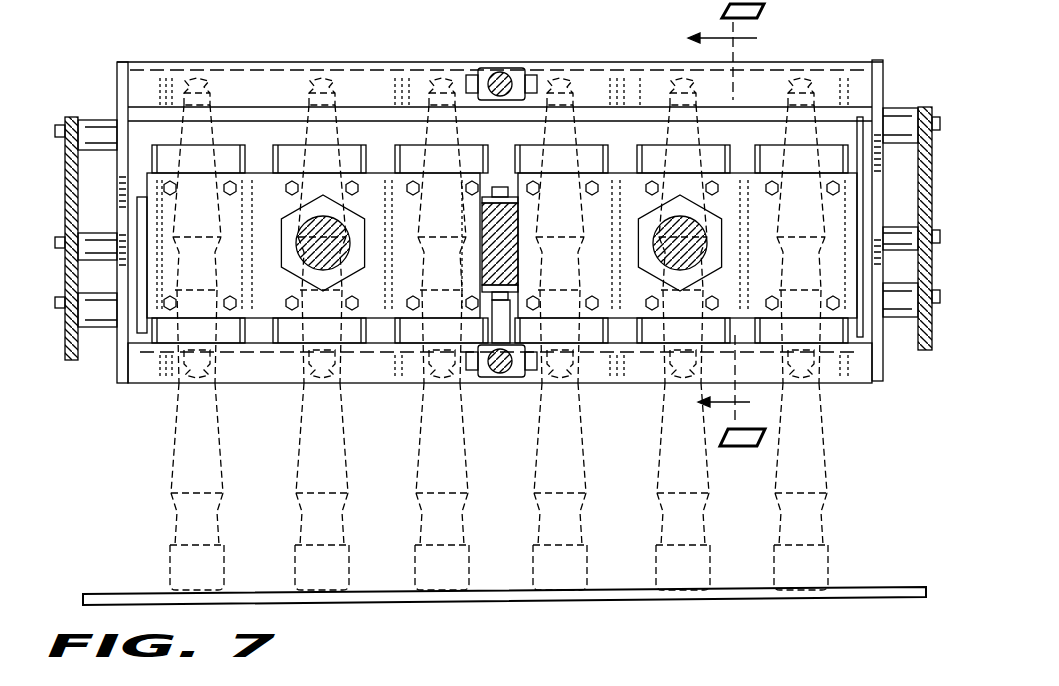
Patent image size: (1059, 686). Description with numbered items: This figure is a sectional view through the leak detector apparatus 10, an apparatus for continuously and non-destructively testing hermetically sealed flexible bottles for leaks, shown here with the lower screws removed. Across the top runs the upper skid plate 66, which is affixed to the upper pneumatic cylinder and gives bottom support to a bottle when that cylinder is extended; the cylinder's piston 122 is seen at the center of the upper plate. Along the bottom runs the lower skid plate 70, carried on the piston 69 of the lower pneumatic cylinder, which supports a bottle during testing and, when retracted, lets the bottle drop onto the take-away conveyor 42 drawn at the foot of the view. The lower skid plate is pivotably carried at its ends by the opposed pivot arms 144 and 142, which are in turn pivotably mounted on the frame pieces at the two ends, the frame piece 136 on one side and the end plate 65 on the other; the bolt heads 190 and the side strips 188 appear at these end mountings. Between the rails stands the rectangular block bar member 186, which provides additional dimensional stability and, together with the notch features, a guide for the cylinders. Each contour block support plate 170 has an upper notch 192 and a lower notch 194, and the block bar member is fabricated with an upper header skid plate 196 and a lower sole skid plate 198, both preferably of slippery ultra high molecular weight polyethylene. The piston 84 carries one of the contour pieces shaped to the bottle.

The apparatus 10 is at (397, 50).
The take-away conveyor 42 is at (853, 587).
The end plate 65 is at (935, 163).
The upper skid plate 66 is at (273, 66).
The piston 69 is at (507, 372).
The lower skid plate 70 is at (245, 365).
The piston 84 is at (687, 268).
The piston 122 is at (500, 76).
The frame piece 136 is at (63, 176).
The pivot arm 142 is at (905, 320).
The pivot arm 144 is at (103, 310).
The contour block support plates 170 is at (803, 193).
The block bar member 186 is at (525, 238).
The side strips 188 is at (137, 200).
The bolt heads 190 is at (55, 255).
The upper notch 192 is at (483, 236).
The lower notch 194 is at (518, 268).
The header skid plate 196 is at (482, 202).
The sole skid plate 198 is at (482, 288).